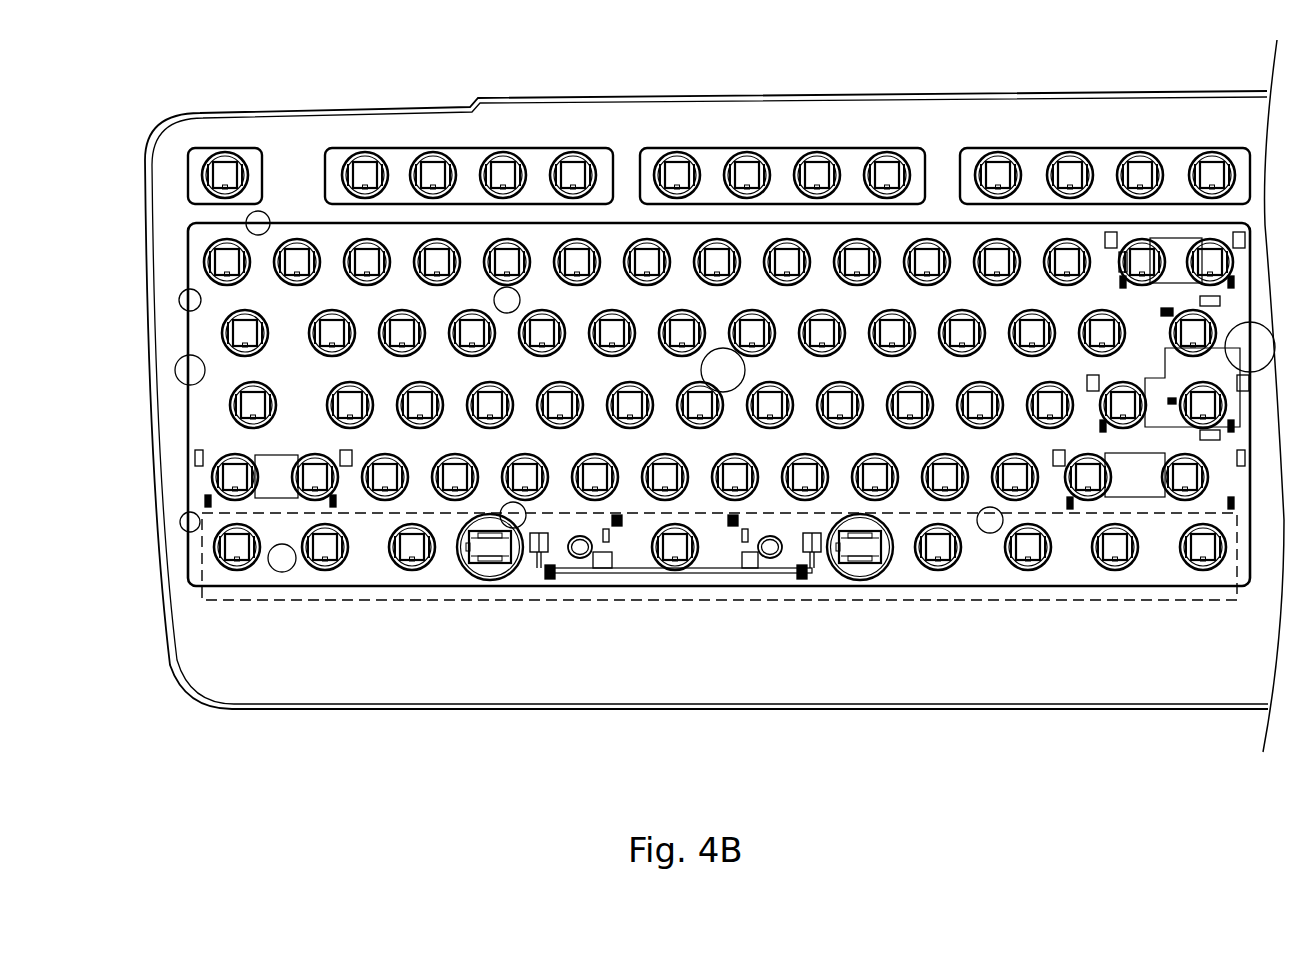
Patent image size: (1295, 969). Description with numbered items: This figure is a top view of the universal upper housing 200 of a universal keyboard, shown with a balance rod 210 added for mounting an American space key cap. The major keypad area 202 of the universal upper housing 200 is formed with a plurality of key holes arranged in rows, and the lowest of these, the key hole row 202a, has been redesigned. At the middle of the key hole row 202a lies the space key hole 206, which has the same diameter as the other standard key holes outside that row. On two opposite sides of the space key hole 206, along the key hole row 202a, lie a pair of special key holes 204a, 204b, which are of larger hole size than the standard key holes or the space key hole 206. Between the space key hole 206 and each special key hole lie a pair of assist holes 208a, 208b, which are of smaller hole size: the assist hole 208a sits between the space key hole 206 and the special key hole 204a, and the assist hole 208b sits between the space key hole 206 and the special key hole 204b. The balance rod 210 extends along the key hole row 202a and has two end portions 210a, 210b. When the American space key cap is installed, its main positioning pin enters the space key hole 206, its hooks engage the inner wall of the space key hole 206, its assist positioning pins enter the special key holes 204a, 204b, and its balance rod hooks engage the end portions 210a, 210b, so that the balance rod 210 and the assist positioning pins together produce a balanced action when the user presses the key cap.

The universal upper housing 200 is at (877, 107).
The major keypad area 202 is at (186, 418).
The key hole row 202a is at (278, 603).
The special key hole 204a is at (467, 573).
The special key hole 204b is at (862, 575).
The space key hole 206 is at (674, 572).
The assist hole 208a is at (578, 560).
The assist hole 208b is at (771, 560).
The balance rod 210 is at (715, 574).
The end portion of balance rod 210a is at (812, 578).
The end portion of balance rod 210b is at (533, 560).